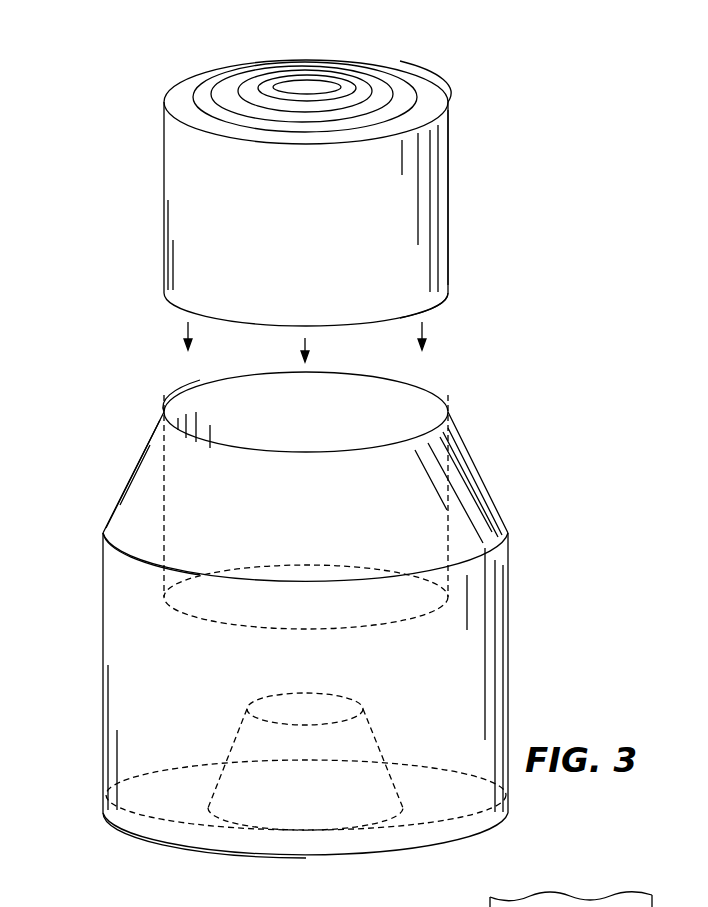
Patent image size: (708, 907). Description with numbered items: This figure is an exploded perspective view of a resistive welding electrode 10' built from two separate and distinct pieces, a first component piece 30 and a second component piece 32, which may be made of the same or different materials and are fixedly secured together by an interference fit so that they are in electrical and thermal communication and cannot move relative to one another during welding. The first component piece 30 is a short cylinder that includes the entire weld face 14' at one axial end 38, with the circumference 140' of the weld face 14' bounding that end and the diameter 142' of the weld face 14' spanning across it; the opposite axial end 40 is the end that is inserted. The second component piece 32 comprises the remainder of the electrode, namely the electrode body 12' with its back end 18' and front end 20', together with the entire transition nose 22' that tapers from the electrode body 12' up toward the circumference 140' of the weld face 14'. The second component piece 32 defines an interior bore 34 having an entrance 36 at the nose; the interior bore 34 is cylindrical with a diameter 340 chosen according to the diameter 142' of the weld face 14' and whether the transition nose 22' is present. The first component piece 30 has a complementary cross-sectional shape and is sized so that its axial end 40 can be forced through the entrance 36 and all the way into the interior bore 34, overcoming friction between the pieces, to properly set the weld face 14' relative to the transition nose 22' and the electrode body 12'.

The weld face 14' is at (275, 172).
The circumference of the weld face 140' is at (257, 97).
The axial end 38 is at (447, 102).
The first component piece 30 is at (478, 214).
The diameter of the weld face 142' is at (306, 208).
The axial end 40 is at (439, 298).
The resistive welding electrode 10' is at (338, 590).
The entrance 36 is at (166, 412).
The diameter of the interior bore 340 is at (448, 390).
The transition nose 22' is at (287, 481).
The interior bore 34 is at (165, 483).
The front end 20' is at (112, 546).
The second component piece 32 is at (537, 611).
The electrode body 12' is at (337, 759).
The back end 18' is at (176, 835).